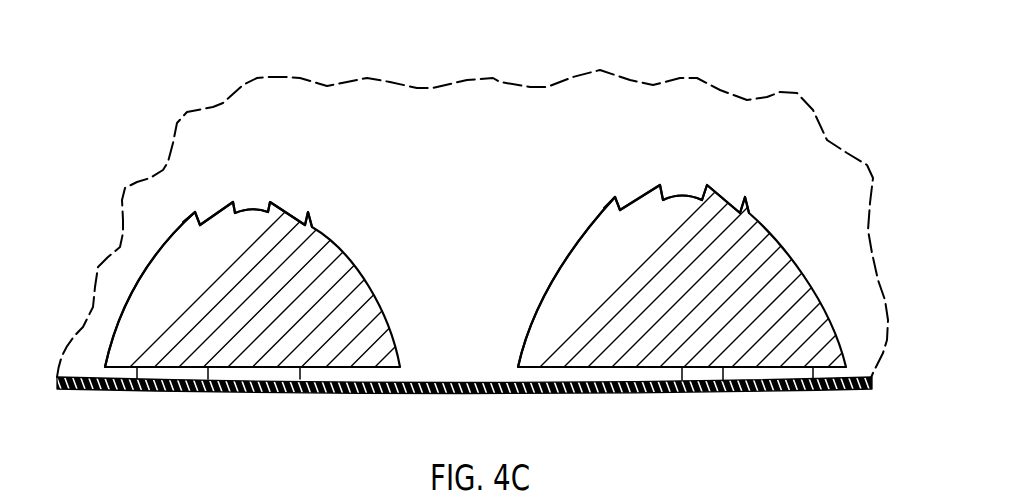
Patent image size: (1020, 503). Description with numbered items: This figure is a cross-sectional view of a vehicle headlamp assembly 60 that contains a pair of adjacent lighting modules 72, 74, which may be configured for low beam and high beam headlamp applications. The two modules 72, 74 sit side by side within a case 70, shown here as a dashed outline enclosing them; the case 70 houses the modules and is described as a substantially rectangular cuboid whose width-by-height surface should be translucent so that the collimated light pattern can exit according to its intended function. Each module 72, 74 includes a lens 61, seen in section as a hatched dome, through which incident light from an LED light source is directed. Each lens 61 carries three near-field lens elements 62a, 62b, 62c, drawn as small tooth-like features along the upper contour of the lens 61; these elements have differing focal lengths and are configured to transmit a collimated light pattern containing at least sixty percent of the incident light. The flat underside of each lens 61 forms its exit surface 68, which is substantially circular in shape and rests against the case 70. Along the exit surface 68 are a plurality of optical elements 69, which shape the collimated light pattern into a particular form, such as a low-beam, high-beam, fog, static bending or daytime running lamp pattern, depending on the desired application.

The vehicle headlamp assembly 60 is at (783, 82).
The lens 61 is at (155, 254).
The near-field lens element 62a is at (183, 218).
The near-field lens element 62b is at (219, 211).
The near-field lens element 62c is at (260, 211).
The exit surface 68 is at (137, 379).
The optical elements 69 is at (300, 379).
The case 70 is at (83, 392).
The lighting module 72 is at (345, 242).
The lighting module 74 is at (768, 208).